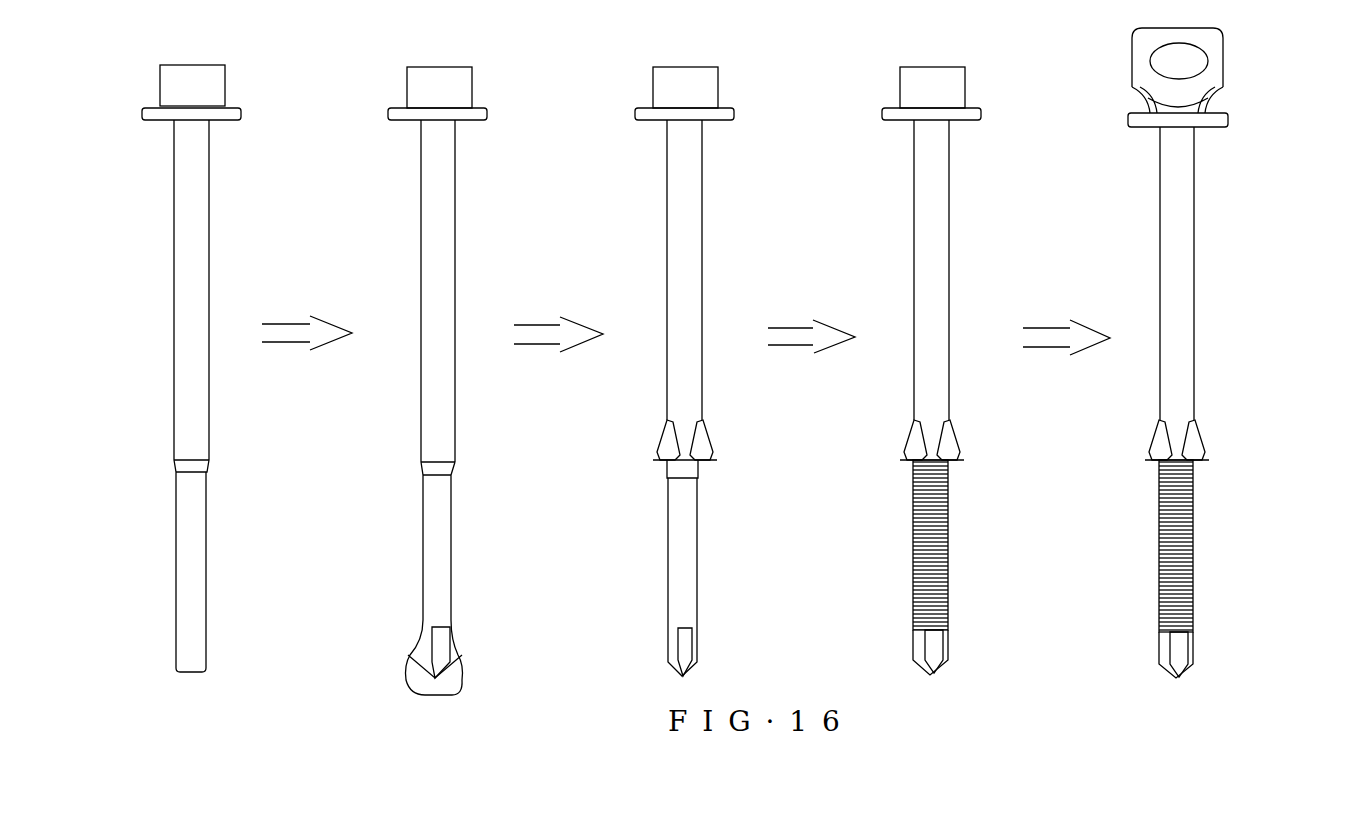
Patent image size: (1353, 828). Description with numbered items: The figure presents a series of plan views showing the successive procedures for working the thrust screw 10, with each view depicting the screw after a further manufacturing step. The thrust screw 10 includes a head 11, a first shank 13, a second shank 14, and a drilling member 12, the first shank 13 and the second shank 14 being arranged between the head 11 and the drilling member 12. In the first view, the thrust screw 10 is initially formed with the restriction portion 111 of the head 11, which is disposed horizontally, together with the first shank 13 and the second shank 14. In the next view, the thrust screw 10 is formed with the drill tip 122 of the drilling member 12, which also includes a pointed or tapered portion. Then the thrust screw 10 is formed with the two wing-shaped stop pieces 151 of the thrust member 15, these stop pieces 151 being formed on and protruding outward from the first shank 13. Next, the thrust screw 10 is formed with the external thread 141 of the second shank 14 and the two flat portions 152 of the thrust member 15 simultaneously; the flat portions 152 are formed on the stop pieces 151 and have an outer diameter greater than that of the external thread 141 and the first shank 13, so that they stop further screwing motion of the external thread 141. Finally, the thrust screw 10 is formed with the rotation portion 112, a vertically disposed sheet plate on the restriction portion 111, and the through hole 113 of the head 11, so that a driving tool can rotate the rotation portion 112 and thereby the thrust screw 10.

The thrust screw 10 is at (140, 278).
The head 11 is at (683, 70).
The restriction portion 111 is at (145, 112).
The rotation portion 112 is at (1140, 42).
The through hole 113 is at (1158, 60).
The drilling member 12 is at (800, 657).
The drill tip 122 is at (420, 656).
The first shank 13 is at (210, 287).
The second shank 14 is at (722, 566).
The external thread 141 is at (913, 540).
The thrust member 15 is at (965, 442).
The wing-shaped stop pieces 151 is at (658, 443).
The flat portions 152 is at (913, 461).